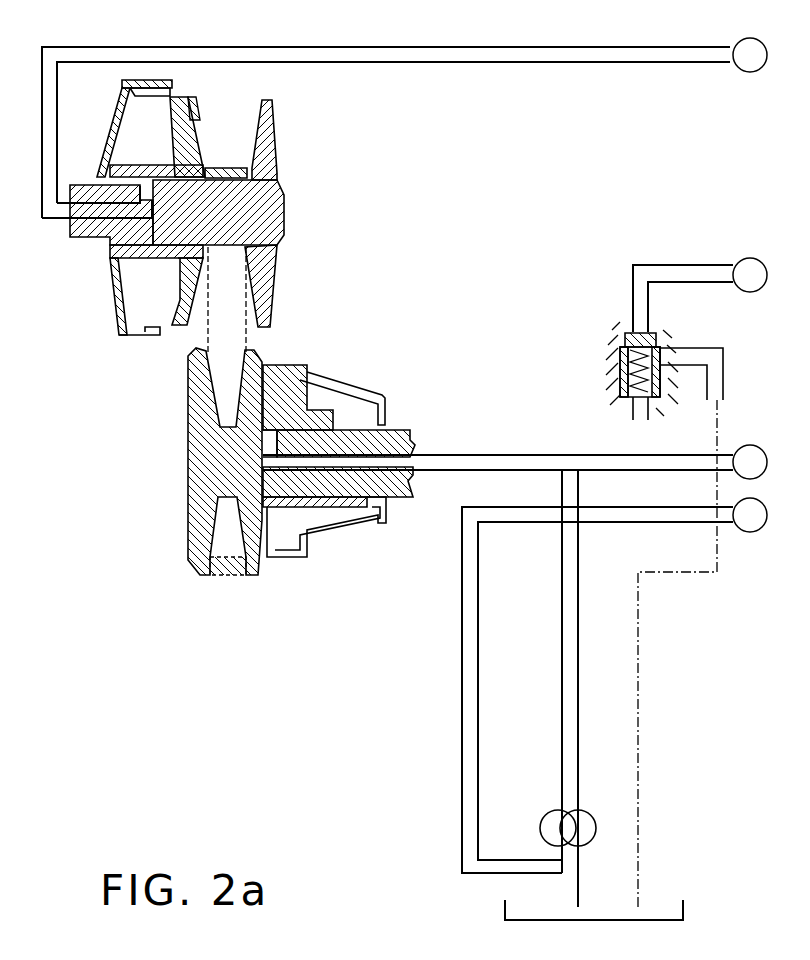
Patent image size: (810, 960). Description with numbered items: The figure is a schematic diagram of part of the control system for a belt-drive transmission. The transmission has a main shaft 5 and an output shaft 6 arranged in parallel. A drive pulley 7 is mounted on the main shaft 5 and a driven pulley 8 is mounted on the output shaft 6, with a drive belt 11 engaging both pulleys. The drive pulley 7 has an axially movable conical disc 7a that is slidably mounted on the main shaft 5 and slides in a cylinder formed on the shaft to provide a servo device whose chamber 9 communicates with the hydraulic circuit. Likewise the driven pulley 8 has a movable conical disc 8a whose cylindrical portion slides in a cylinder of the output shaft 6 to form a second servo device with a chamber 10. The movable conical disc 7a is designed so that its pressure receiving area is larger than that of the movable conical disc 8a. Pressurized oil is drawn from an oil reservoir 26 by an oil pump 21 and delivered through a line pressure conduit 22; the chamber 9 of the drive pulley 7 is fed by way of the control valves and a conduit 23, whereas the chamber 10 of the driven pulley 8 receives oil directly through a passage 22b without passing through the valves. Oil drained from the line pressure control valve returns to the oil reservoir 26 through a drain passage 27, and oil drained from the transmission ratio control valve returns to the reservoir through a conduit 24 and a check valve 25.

The conduit 23 is at (570, 46).
The conduit 24 is at (687, 265).
The check valve 25 is at (612, 378).
The passage 22b is at (537, 455).
The line pressure conduit 22 is at (687, 455).
The drain passage 27 is at (610, 522).
The oil pump 21 is at (592, 820).
The oil reservoir 26 is at (685, 908).
The axially movable conical disc 7a is at (196, 112).
The drive pulley 7 is at (287, 117).
The chamber 9 is at (152, 146).
The main shaft 5 is at (88, 238).
The movable conical disc 8a is at (250, 397).
The driven pulley 8 is at (178, 496).
The output shaft 6 is at (408, 430).
The chamber 10 is at (355, 512).
The drive belt 11 is at (232, 577).